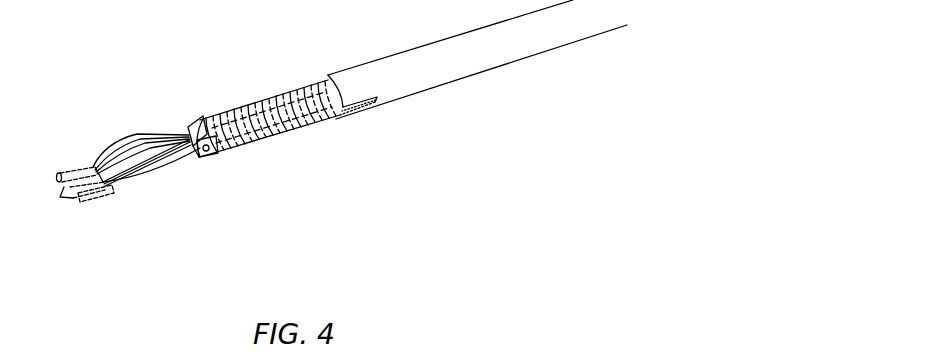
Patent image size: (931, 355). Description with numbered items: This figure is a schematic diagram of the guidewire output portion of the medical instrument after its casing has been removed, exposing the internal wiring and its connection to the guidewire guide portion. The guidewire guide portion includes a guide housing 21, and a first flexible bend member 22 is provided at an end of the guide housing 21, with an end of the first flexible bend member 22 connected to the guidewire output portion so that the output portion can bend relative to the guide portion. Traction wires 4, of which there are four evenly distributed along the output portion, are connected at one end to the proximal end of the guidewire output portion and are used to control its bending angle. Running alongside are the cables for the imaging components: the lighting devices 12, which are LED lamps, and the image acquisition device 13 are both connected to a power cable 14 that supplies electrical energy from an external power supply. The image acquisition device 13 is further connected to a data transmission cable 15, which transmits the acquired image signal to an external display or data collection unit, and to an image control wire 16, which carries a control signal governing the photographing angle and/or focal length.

The traction wire 4 is at (189, 124).
The lighting device 12 is at (85, 168).
The image acquisition device 13 is at (88, 195).
The power cable 14 is at (148, 132).
The data transmission cable 15 is at (105, 183).
The image control wire 16 is at (181, 161).
The guide housing 21 is at (423, 70).
The first flexible bend member 22 is at (296, 133).